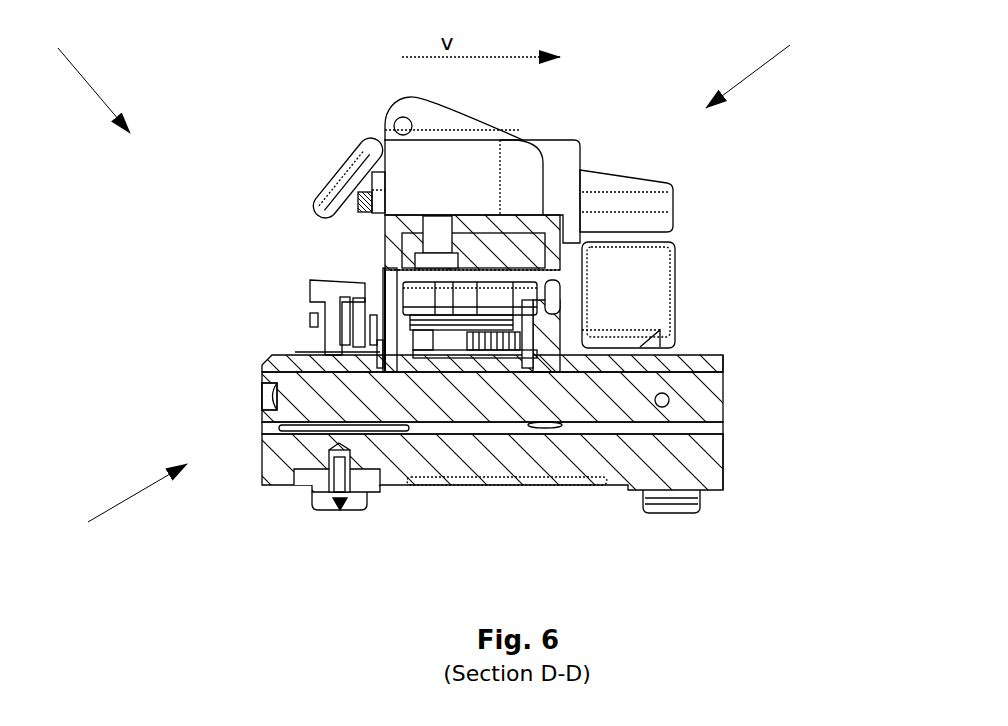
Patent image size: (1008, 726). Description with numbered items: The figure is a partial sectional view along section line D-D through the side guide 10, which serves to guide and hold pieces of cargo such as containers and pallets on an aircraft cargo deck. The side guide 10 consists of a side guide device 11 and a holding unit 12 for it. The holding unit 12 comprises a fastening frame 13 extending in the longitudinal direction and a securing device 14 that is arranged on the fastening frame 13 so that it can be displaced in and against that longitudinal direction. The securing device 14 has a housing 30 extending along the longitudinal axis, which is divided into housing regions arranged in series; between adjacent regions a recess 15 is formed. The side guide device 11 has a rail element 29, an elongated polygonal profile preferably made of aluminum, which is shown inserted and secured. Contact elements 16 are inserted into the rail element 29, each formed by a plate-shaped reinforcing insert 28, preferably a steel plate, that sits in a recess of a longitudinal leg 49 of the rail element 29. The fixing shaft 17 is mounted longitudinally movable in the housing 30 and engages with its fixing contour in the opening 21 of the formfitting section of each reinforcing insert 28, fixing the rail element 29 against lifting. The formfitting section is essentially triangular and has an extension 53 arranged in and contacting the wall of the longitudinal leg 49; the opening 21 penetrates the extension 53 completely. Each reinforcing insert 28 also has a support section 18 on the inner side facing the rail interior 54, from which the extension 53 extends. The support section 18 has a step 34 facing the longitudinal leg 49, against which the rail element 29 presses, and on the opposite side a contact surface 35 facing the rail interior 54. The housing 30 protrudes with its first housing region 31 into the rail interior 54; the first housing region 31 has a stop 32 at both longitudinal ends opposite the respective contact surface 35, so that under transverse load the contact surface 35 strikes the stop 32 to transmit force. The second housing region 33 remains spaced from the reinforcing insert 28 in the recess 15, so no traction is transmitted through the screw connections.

The side guide 10 is at (86, 69).
The side guide device 11 is at (765, 56).
The holding unit 12 is at (116, 510).
The fastening frame 13 is at (260, 487).
The securing device 14 is at (262, 445).
The recess 15 is at (313, 315).
The contact element 16 is at (348, 283).
The fixing shaft 17 is at (727, 430).
The support section 18 is at (387, 278).
The opening 21 is at (325, 478).
The reinforcing insert 28 is at (388, 290).
The rail element 29 is at (335, 175).
The housing 30 is at (690, 398).
The first housing region 31 is at (450, 300).
The stop 32 is at (396, 360).
The second housing region 33 is at (295, 356).
The step 34 is at (413, 360).
The contact surface 35 is at (360, 360).
The longitudinal leg 49 is at (388, 283).
The extension 53 is at (272, 392).
The rail interior 54 is at (512, 270).